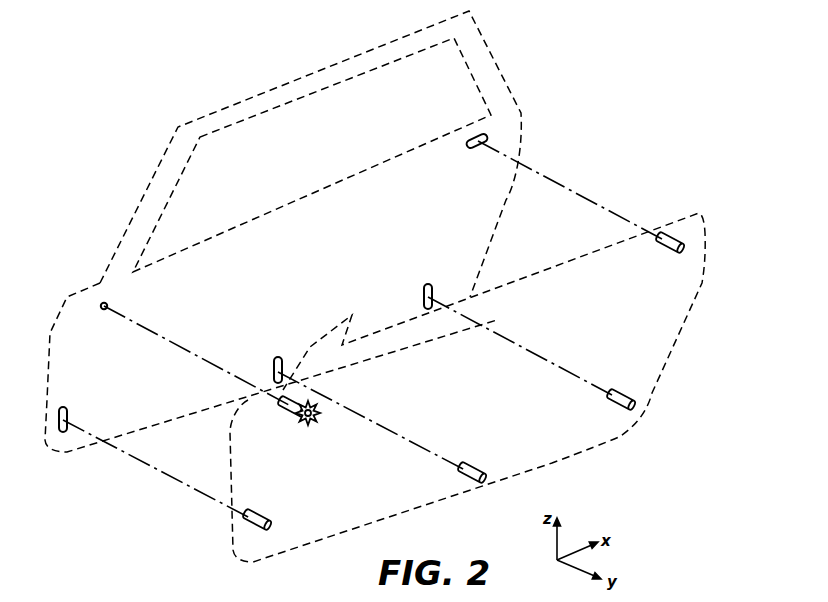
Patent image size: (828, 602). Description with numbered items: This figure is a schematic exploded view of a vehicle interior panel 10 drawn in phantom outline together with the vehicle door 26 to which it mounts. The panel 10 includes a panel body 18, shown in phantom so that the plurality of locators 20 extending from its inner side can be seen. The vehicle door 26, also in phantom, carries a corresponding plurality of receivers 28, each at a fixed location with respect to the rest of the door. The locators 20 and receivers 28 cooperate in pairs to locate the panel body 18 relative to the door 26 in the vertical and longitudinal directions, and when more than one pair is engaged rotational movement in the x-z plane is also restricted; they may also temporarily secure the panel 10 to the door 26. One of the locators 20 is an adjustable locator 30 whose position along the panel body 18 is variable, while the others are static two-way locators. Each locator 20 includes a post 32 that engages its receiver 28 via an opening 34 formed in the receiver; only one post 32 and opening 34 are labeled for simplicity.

The panel 10 is at (696, 196).
The panel body 18 is at (668, 225).
The locators 20 is at (463, 380).
The vehicle door 26 is at (167, 155).
The receivers 28 is at (274, 282).
The adjustable locator 30 is at (320, 424).
The post 32 is at (622, 392).
The opening 34 is at (408, 272).